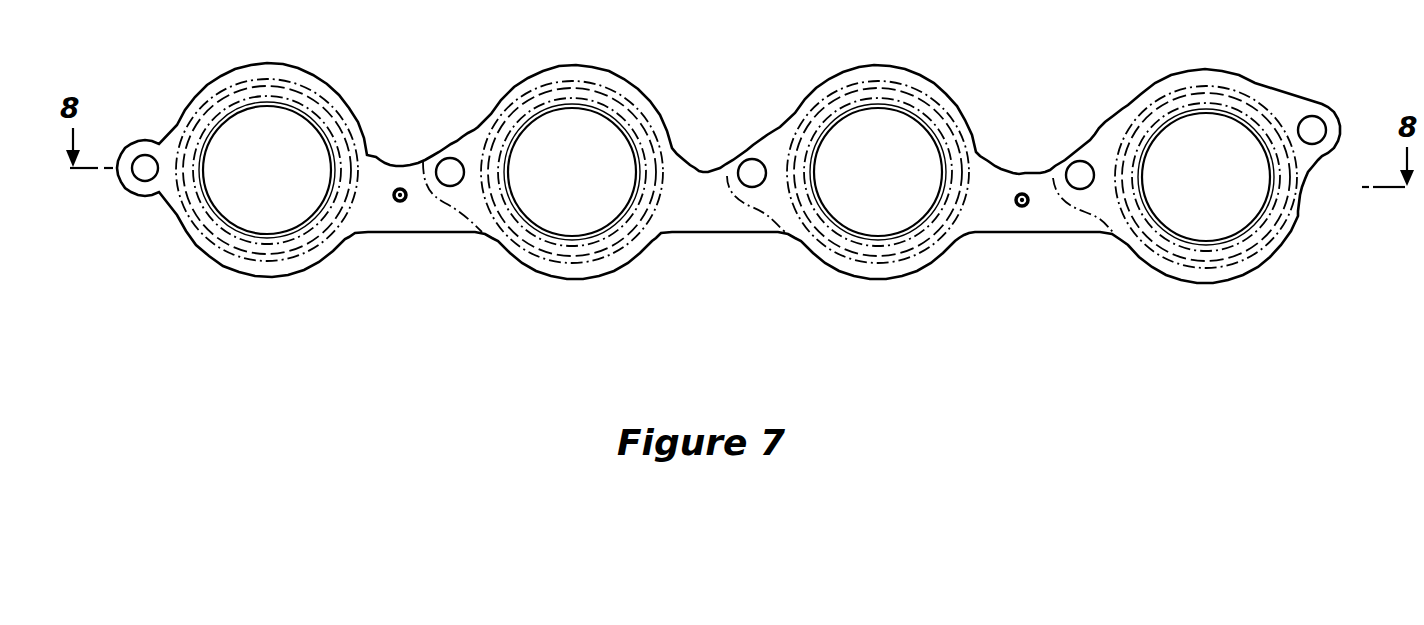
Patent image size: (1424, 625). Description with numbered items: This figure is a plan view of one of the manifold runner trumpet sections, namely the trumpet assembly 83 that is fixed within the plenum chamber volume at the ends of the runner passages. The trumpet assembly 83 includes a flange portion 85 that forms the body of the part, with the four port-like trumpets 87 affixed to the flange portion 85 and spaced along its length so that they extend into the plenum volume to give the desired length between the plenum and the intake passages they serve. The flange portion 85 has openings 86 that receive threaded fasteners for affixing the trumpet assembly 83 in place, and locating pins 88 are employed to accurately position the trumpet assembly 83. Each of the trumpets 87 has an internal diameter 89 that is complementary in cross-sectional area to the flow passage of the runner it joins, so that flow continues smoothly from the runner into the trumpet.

The trumpet assembly 83 is at (661, 58).
The flange portion 85 is at (722, 222).
The openings 86 is at (450, 158).
The trumpets 87 is at (918, 200).
The locating pins 88 is at (400, 203).
The internal diameters 89 is at (838, 220).